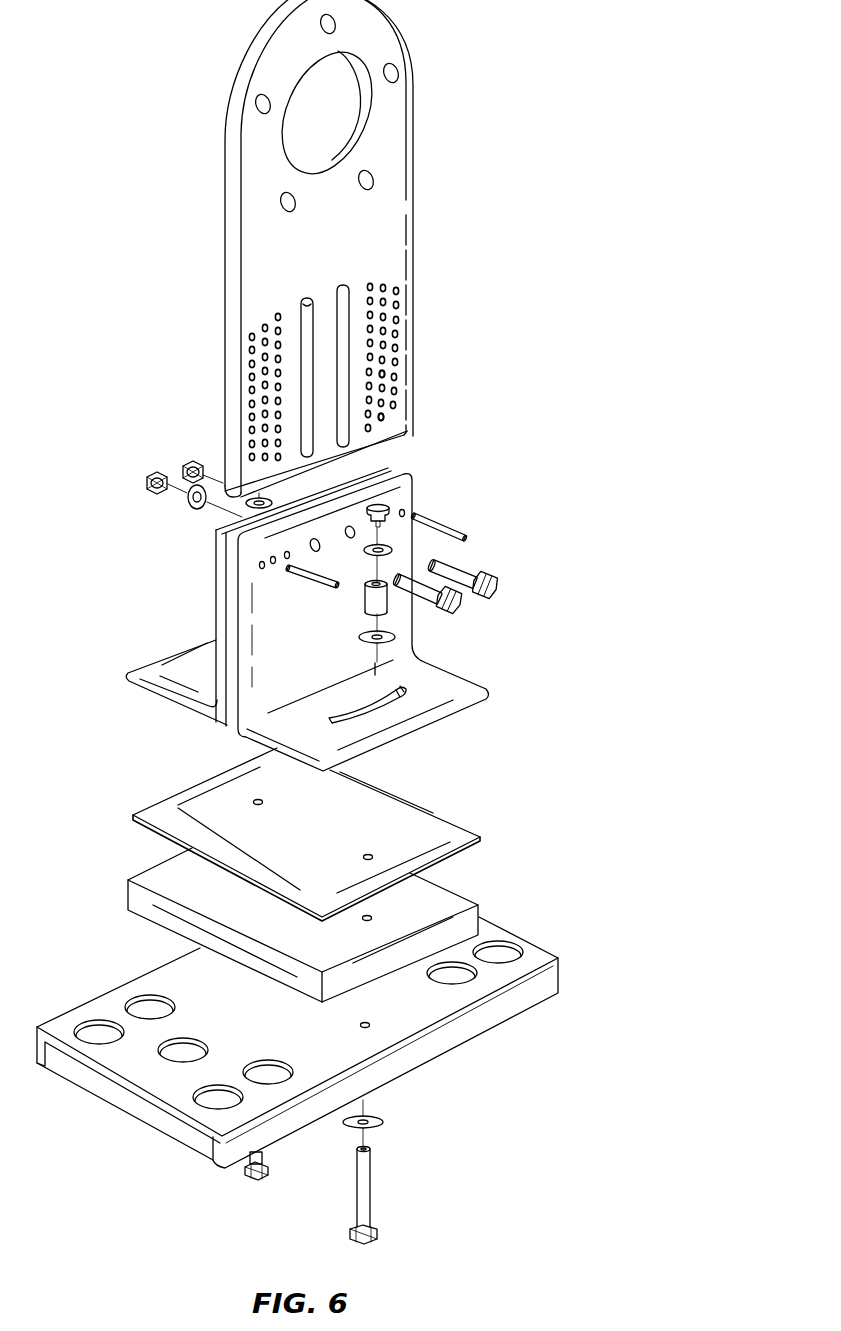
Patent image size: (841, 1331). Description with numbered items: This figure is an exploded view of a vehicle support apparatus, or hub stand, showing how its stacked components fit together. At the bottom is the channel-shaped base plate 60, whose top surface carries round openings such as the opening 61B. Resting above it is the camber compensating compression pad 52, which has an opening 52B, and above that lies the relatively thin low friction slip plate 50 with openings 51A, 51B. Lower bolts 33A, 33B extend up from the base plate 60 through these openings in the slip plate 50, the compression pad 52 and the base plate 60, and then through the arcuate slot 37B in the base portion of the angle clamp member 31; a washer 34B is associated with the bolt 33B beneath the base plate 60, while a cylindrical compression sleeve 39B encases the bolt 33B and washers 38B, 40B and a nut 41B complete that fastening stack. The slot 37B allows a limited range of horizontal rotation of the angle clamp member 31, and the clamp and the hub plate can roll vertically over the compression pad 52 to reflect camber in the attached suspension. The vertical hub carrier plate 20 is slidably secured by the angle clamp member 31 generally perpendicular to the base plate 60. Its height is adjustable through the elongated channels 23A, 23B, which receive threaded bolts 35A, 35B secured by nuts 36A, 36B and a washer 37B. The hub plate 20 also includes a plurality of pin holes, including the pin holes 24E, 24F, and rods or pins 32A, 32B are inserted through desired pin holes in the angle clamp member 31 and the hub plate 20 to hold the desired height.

The hub carrier plate 20 is at (388, 143).
The elongated channel 23A is at (306, 304).
The elongated channel 23B is at (349, 288).
The pin hole 24E is at (382, 377).
The pin hole 24F is at (380, 418).
The angle clamp member 31 is at (285, 652).
The pin 32A is at (449, 526).
The pin 32B is at (308, 578).
The bolt 33A is at (263, 1168).
The bolt 33B is at (366, 1193).
The washer 34B is at (386, 1121).
The bolt 35A is at (496, 585).
The bolt 35B is at (461, 598).
The nut 36A is at (192, 462).
The nut 36B is at (155, 472).
The slot 37B is at (192, 507).
The washer 38B is at (396, 636).
The compression sleeve 39B is at (388, 601).
The washer 40B is at (393, 549).
The nut 41B is at (390, 509).
The slip plate 50 is at (163, 815).
The opening 51A is at (258, 798).
The opening 51B is at (371, 855).
The compression pad 52 is at (138, 897).
The opening 52B is at (371, 915).
The base plate 60 is at (530, 992).
The opening 61B is at (373, 1023).